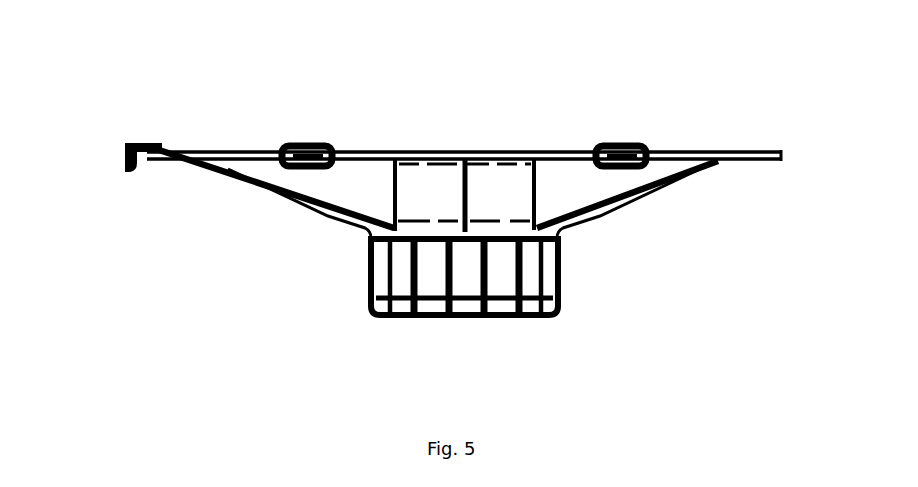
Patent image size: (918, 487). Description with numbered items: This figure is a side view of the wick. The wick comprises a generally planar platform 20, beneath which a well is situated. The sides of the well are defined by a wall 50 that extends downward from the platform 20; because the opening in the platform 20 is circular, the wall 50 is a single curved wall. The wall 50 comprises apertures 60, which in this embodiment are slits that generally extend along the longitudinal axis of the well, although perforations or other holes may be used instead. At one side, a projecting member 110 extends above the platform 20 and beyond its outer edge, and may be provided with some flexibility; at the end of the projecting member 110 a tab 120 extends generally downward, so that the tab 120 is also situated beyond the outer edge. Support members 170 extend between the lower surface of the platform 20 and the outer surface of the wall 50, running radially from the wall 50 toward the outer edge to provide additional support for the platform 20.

The platform 20 is at (700, 146).
The wall 50 is at (558, 275).
The apertures 60 is at (481, 280).
The projecting member 110 is at (150, 141).
The tab 120 is at (123, 157).
The support members 170 is at (347, 187).